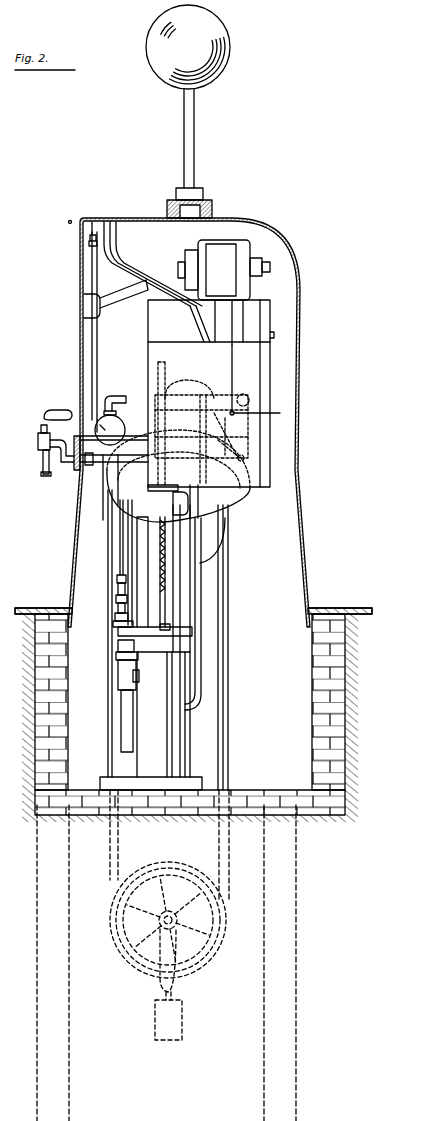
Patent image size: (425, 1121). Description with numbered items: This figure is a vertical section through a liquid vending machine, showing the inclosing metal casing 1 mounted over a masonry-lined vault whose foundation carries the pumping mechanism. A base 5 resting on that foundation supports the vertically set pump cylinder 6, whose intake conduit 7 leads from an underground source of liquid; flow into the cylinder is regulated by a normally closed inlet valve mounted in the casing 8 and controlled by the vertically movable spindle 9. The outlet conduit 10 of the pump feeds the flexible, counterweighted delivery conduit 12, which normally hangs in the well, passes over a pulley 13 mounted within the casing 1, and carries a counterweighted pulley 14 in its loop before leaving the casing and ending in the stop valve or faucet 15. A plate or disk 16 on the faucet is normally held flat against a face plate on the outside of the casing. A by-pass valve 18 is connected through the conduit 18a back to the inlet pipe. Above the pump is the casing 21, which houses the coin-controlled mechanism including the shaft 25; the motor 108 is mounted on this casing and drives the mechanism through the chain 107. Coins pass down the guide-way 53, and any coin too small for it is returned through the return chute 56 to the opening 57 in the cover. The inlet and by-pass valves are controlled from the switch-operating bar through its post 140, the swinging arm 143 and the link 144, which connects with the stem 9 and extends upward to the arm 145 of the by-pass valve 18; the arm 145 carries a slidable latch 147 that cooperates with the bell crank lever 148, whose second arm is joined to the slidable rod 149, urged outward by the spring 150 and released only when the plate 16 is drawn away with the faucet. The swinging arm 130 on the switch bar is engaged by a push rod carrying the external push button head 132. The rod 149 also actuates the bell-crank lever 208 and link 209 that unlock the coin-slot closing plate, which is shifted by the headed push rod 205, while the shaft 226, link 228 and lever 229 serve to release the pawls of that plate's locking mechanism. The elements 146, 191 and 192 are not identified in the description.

The inclosing metal casing 1 is at (78, 518).
The base 5 is at (186, 710).
The pump cylinder 6 is at (140, 583).
The intake conduit 7 is at (121, 733).
The valve casing 8 is at (118, 632).
The spindle 9 is at (118, 600).
The outlet conduit 10 is at (104, 488).
The flexible delivery conduit 12 is at (230, 656).
The pulley 13 is at (224, 523).
The counterweighted pulley 14 is at (170, 864).
The faucet 15 is at (38, 446).
The plate 16 is at (74, 468).
The by-pass valve 18 is at (211, 393).
The conduit 18a is at (192, 579).
The casing 21 is at (272, 393).
The shaft 25 is at (223, 435).
The guide-way 53 is at (174, 296).
The return chute 56 is at (128, 300).
The opening 57 is at (83, 308).
The chain 107 is at (270, 287).
The motor 108 is at (238, 240).
The swinging arm 130 is at (236, 400).
The push button head 132 is at (64, 420).
The post 140 is at (229, 449).
The swinging arm 143 is at (168, 372).
The link 144 is at (126, 550).
The arm 145 is at (134, 398).
The link 146 is at (182, 392).
The slidable latch 147 is at (233, 398).
The bell crank lever 148 is at (236, 436).
The slidable rod 149 is at (239, 466).
The spring 150 is at (88, 465).
The cylinder 191 is at (201, 426).
The piston 192 is at (190, 440).
The push rod 205 is at (72, 218).
The bell-crank lever 208 is at (98, 418).
The link 209 is at (96, 338).
The shaft 226 is at (185, 219).
The link 228 is at (233, 330).
The lever 229 is at (296, 406).